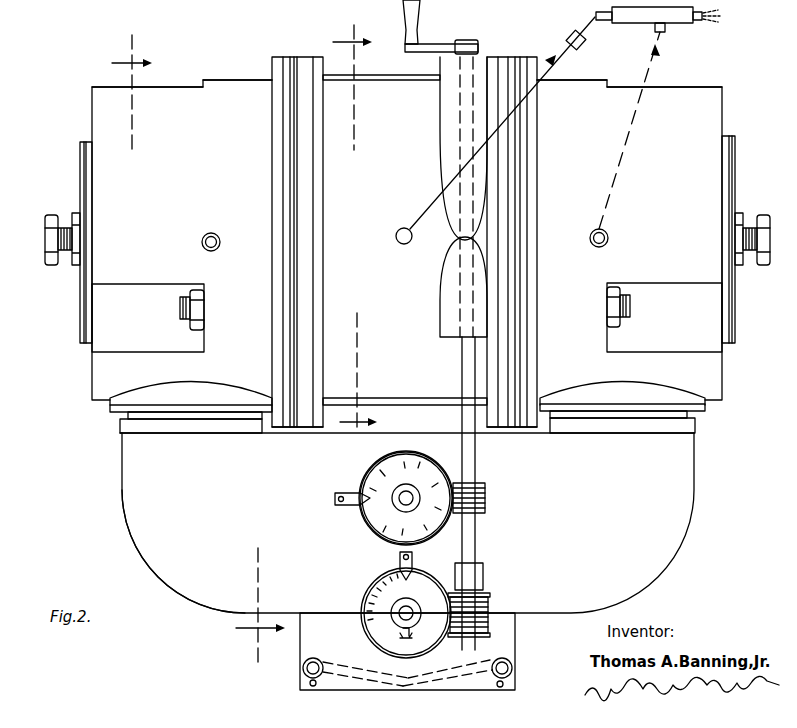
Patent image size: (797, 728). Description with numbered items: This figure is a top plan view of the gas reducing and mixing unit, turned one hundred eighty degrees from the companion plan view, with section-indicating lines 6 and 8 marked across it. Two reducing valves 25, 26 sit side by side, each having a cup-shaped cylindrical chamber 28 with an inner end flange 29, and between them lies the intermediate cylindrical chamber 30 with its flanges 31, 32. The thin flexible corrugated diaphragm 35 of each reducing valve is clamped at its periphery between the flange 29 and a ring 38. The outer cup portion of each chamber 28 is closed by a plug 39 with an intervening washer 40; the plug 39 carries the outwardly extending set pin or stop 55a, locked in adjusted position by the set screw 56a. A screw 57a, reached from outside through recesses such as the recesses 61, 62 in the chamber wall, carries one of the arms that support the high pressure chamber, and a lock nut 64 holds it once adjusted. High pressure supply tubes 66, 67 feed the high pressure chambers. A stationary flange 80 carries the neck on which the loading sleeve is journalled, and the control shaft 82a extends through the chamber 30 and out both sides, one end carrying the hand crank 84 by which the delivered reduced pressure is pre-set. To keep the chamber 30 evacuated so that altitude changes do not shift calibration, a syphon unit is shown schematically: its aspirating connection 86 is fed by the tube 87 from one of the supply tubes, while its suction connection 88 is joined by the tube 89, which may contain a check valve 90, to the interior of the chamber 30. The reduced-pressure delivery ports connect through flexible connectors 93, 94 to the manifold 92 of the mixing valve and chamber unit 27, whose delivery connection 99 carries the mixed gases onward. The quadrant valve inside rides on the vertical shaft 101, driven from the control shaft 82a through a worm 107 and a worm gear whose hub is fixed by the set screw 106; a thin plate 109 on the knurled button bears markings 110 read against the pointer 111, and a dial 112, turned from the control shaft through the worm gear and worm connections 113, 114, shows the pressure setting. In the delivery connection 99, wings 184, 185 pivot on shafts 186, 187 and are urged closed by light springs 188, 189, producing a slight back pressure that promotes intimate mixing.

The section line 6 is at (198, 348).
The section line 8 is at (361, 228).
The reducing valve 25 is at (677, 87).
The reducing valve 26 is at (230, 81).
The mixing valve and chamber unit 27 is at (210, 611).
The cylindrical chamber 28 is at (407, 240).
The inner end flange 29 is at (284, 57).
The intermediate cylindrical chamber 30 is at (372, 75).
The flange 31 is at (490, 57).
The flange 32 is at (317, 57).
The corrugated diaphragm 35 is at (292, 57).
The ring 38 is at (308, 428).
The plug 39 is at (80, 157).
The washer 40 is at (88, 140).
The set pin 55a is at (752, 196).
The set screw 56a is at (757, 277).
The screw 57a is at (648, 305).
The recess 61 is at (178, 85).
The recess 62 is at (407, 317).
The lock nut 64 is at (190, 332).
The high pressure supply tube 66 is at (610, 238).
The high pressure supply tube 67 is at (200, 240).
The flange 80 is at (510, 212).
The control shaft 82a is at (478, 456).
The hand crank 84 is at (419, 18).
The aspirating connection 86 is at (666, 29).
The tube 87 is at (636, 125).
The suction connection 88 is at (607, 9).
The tube 89 is at (563, 38).
The check valve 90 is at (584, 44).
The manifold 92 is at (407, 523).
The flexible connector 93 is at (122, 417).
The flexible connector 94 is at (686, 412).
The delivery connection 99 is at (300, 650).
The valve shaft 101 is at (416, 613).
The set screw 106 is at (413, 633).
The worm 107 is at (491, 600).
The thin plate 109 is at (487, 574).
The markings 110 is at (375, 578).
The pointer 111 is at (413, 561).
The dial 112 is at (370, 465).
The worm gear connection 113 is at (452, 527).
The worm connection 114 is at (487, 496).
The wing 184 is at (340, 683).
The wing 185 is at (456, 686).
The shaft 186 is at (306, 675).
The shaft 187 is at (513, 663).
The spring 188 is at (313, 657).
The spring 189 is at (513, 676).